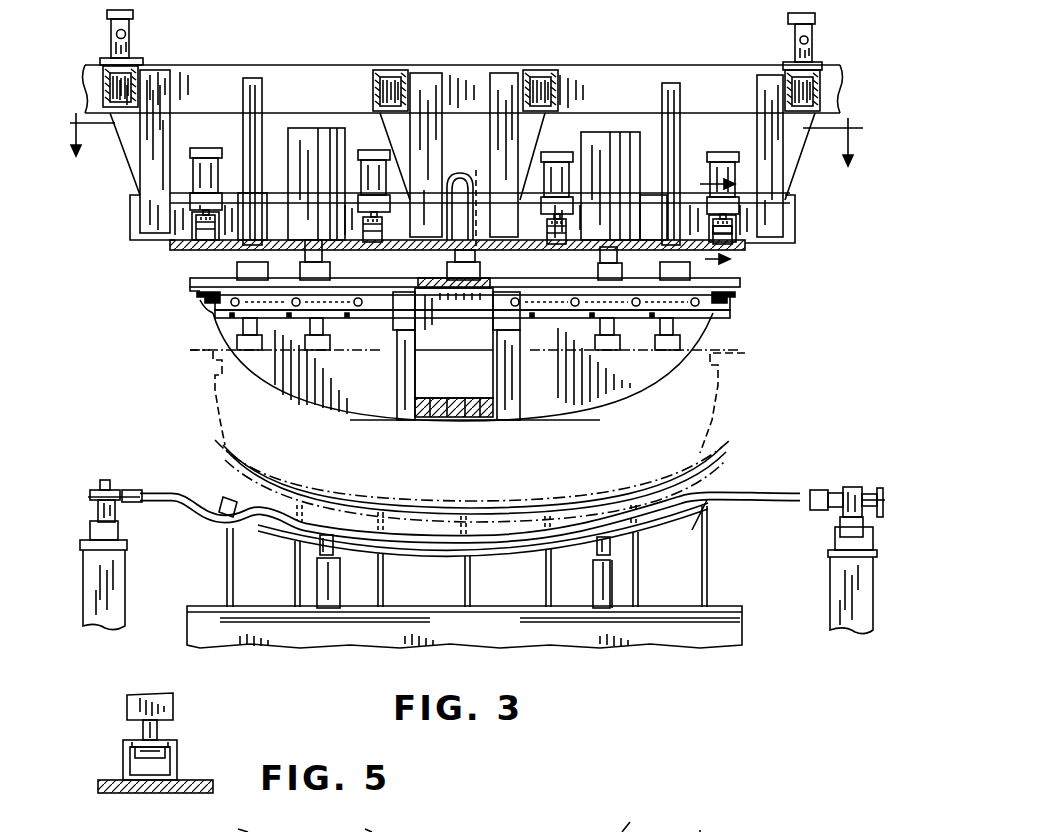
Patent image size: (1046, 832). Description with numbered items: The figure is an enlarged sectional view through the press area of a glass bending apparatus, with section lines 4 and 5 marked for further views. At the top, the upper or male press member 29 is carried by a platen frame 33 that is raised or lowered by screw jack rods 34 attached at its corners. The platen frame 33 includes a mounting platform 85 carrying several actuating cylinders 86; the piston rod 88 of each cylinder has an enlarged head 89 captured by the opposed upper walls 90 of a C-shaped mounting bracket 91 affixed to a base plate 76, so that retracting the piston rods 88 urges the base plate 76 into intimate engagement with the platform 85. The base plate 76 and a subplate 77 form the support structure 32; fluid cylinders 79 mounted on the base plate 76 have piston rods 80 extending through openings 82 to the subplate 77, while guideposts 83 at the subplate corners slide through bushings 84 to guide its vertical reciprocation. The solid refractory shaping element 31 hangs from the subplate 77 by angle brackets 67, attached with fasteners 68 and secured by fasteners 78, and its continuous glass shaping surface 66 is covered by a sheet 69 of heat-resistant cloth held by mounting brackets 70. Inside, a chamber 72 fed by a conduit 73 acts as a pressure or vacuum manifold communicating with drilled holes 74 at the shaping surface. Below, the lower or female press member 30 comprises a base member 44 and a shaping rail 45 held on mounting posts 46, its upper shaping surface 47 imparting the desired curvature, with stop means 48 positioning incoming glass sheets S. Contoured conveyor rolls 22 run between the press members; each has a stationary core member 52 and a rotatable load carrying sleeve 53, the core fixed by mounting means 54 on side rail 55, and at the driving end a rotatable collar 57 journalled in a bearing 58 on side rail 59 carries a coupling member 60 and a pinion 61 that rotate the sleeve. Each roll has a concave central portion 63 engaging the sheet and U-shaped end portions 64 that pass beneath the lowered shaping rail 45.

In FIG. 3, the contoured conveyor rolls 22 is at (780, 492).
In FIG. 3, the upper or male press member 29 is at (150, 369).
In FIG. 3, the lower or female press member 30 is at (203, 585).
In FIG. 3, the shaping element 31 is at (250, 389).
In FIG. 3, the support structure 32 is at (146, 280).
In FIG. 3, the platen frame 33 is at (334, 62).
In FIG. 3, the screw jack rods 34 is at (135, 16).
In FIG. 3, the base member 44 is at (742, 615).
In FIG. 3, the shaping rail 45 is at (700, 460).
In FIG. 3, the mounting posts 46 is at (543, 597).
In FIG. 3, the shaping surface 47 is at (447, 548).
In FIG. 3, the stop means 48 is at (323, 585).
In FIG. 3, the core member 52 is at (132, 490).
In FIG. 3, the load carrying sleeve 53 is at (166, 504).
In FIG. 3, the mounting means 54 is at (100, 483).
In FIG. 3, the side rail 55 is at (87, 533).
In FIG. 3, the rotatable collar 57 is at (837, 493).
In FIG. 3, the bearing 58 is at (848, 487).
In FIG. 3, the side rail 59 is at (828, 542).
In FIG. 3, the coupling member 60 is at (815, 490).
In FIG. 3, the pinion 61 is at (880, 488).
In FIG. 3, the concave central portion 63 is at (507, 548).
In FIG. 3, the U-shaped end portions 64 is at (222, 528).
In FIG. 3, the glass shaping surface 66 is at (363, 423).
In FIG. 3, the angle brackets 67 is at (205, 293).
In FIG. 3, the fasteners 68 is at (620, 318).
In FIG. 3, the sheet of heat-resistant cloth 69 is at (403, 420).
In FIG. 3, the mounting brackets 70 is at (213, 313).
In FIG. 3, the chamber 72 is at (427, 368).
In FIG. 3, the conduit 73 is at (478, 258).
In FIG. 3, the drilled holes 74 is at (466, 397).
In FIG. 3, the base plate 76 is at (753, 250).
In FIG. 5, the base plate 76 is at (123, 797).
In FIG. 3, the subplate 77 is at (733, 293).
In FIG. 3, the fasteners 78 is at (387, 300).
In FIG. 3, the fluid cylinders 79 is at (303, 133).
In FIG. 5, the fluid cylinders 79 is at (503, 816).
In FIG. 3, the rod 80 is at (328, 257).
In FIG. 3, the openings 82 is at (318, 240).
In FIG. 3, the guideposts 83 is at (255, 78).
In FIG. 5, the guideposts 83 is at (227, 820).
In FIG. 3, the bushings 84 is at (245, 228).
In FIG. 5, the bushings 84 is at (698, 821).
In FIG. 3, the mounting platform 85 is at (126, 211).
In FIG. 3, the actuating cylinders 86 is at (207, 150).
In FIG. 5, the actuating cylinders 86 is at (133, 702).
In FIG. 3, the piston rods 88 is at (195, 208).
In FIG. 5, the piston rods 88 is at (160, 733).
In FIG. 3, the enlarged head 89 is at (737, 231).
In FIG. 5, the enlarged head 89 is at (135, 755).
In FIG. 5, the upper walls 90 is at (132, 740).
In FIG. 3, the C-shaped mounting bracket 91 is at (195, 232).
In FIG. 5, the C-shaped mounting bracket 91 is at (178, 762).
In FIG. 3, the glass sheets S is at (538, 500).
In FIG. 3, the section line 4- 4 is at (458, 132).
In FIG. 3, the section line 5- 5 is at (716, 224).